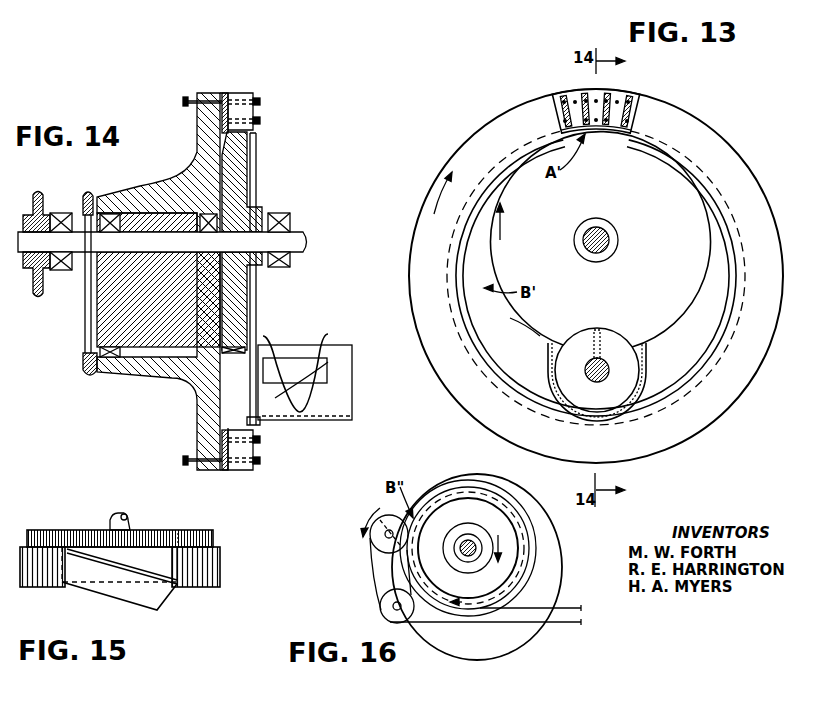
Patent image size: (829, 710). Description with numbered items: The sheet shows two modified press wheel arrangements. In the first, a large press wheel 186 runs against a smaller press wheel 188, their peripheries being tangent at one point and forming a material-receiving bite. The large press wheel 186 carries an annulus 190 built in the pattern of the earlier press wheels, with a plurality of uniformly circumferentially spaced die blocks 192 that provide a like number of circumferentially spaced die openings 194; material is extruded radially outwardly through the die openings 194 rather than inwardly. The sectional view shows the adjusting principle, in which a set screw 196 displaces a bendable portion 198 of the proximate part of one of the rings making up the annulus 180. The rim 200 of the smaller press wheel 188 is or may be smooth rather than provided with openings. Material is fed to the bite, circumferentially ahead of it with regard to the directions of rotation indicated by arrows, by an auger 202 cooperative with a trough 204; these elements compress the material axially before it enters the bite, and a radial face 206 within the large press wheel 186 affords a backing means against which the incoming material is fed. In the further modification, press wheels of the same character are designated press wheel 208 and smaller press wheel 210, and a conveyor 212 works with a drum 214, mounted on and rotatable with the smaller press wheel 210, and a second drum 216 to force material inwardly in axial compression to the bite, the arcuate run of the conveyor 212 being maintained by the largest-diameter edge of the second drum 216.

In FIG. 14, the annulus 180 is at (258, 98).
In FIG. 13, the large press wheel 186 is at (713, 145).
In FIG. 14, the large press wheel 186 is at (188, 134).
In FIG. 13, the smaller press wheel 188 is at (665, 308).
In FIG. 14, the smaller press wheel 188 is at (260, 202).
In FIG. 13, the annulus 190 is at (560, 96).
In FIG. 13, the die blocks 192 is at (610, 93).
In FIG. 13, the die openings 194 is at (615, 130).
In FIG. 14, the set screw 196 is at (186, 97).
In FIG. 14, the bendable portion 198 is at (226, 93).
In FIG. 13, the rim 200 is at (526, 321).
In FIG. 13, the auger 202 is at (563, 366).
In FIG. 14, the auger 202 is at (322, 334).
In FIG. 13, the trough 204 is at (597, 422).
In FIG. 14, the trough 204 is at (322, 421).
In FIG. 13, the radial face 206 is at (478, 328).
In FIG. 14, the radial face 206 is at (222, 396).
In FIG. 15, the press wheel 208 is at (215, 538).
In FIG. 16, the press wheel 208 is at (562, 571).
In FIG. 15, the smaller press wheel 210 is at (179, 538).
In FIG. 16, the smaller press wheel 210 is at (530, 552).
In FIG. 15, the conveyor 212 is at (222, 568).
In FIG. 16, the conveyor 212 is at (373, 565).
In FIG. 15, the drum 214 is at (178, 570).
In FIG. 15, the second drum 216 is at (158, 612).
In FIG. 16, the second drum 216 is at (497, 500).